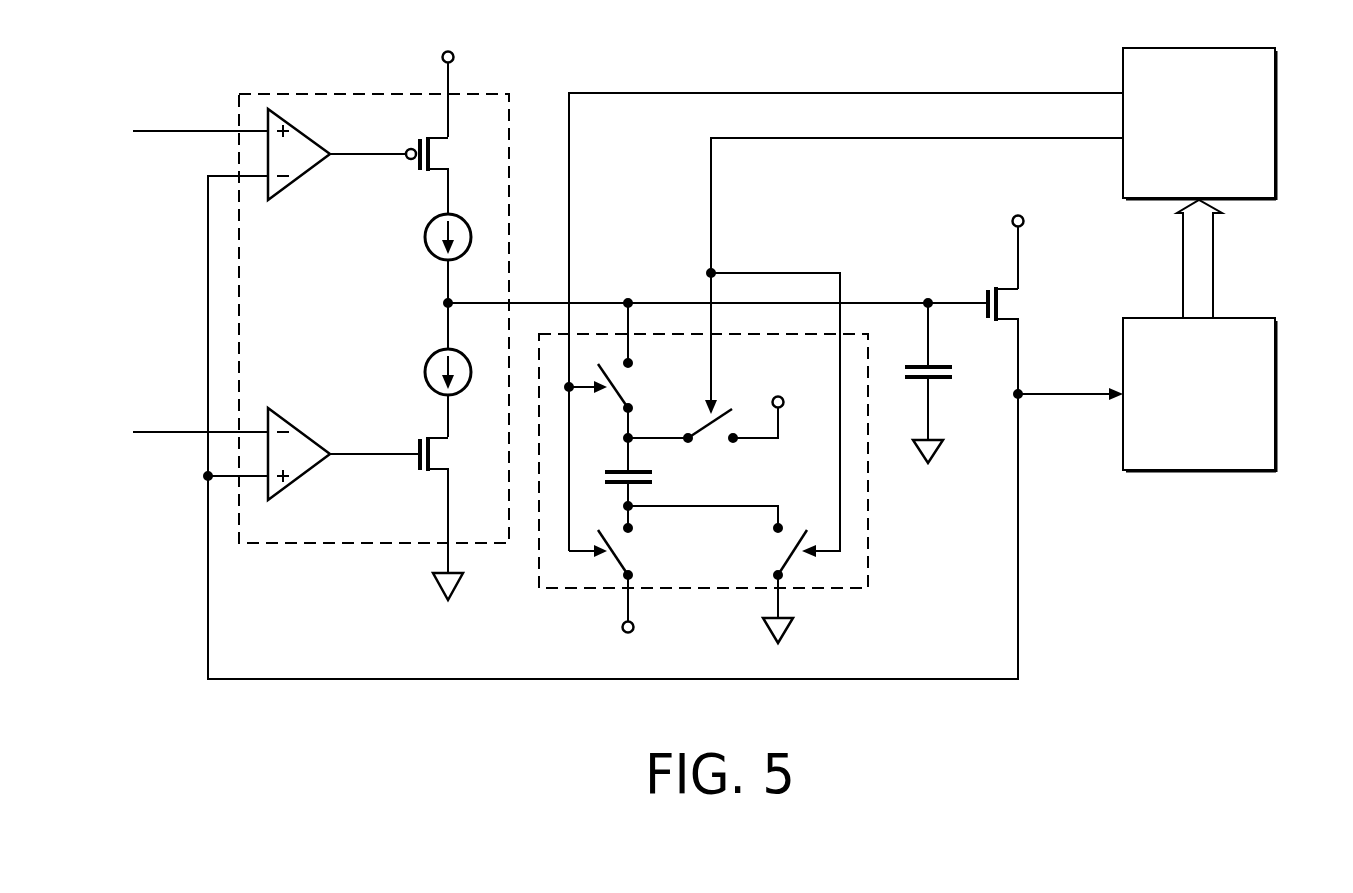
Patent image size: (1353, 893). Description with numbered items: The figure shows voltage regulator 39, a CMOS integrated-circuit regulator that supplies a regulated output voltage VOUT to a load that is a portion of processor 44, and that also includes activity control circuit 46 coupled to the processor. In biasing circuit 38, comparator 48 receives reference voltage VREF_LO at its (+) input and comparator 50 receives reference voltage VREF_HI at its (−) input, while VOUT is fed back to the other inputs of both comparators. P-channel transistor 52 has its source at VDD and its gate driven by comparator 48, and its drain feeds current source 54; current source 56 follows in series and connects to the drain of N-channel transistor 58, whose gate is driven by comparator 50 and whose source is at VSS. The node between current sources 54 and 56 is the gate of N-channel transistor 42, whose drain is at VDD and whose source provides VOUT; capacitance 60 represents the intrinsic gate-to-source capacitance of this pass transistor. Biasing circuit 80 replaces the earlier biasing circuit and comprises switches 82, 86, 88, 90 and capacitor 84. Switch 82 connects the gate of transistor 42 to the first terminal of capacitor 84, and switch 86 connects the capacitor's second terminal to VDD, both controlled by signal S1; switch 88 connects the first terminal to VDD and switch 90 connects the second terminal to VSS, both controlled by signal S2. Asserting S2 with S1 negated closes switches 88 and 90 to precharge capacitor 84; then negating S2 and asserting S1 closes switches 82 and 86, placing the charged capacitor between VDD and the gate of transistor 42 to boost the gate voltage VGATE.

The biasing circuit 38 is at (308, 93).
The voltage regulator 39 is at (1168, 670).
The N-channel transistor 42 is at (1008, 299).
The processor 44 is at (1184, 446).
The activity control circuit 46 is at (1278, 99).
The comparator 48 is at (302, 180).
The comparator 50 is at (297, 425).
The P-channel transistor 52 is at (438, 150).
The current source 54 is at (425, 237).
The current source 56 is at (425, 370).
The N-channel transistor 58 is at (438, 451).
The capacitance 60 is at (940, 381).
The biasing circuit 80 is at (869, 540).
The switch 82 is at (622, 385).
The capacitor 84 is at (610, 464).
The switch 86 is at (622, 551).
The switch 88 is at (711, 440).
The switch 90 is at (790, 549).